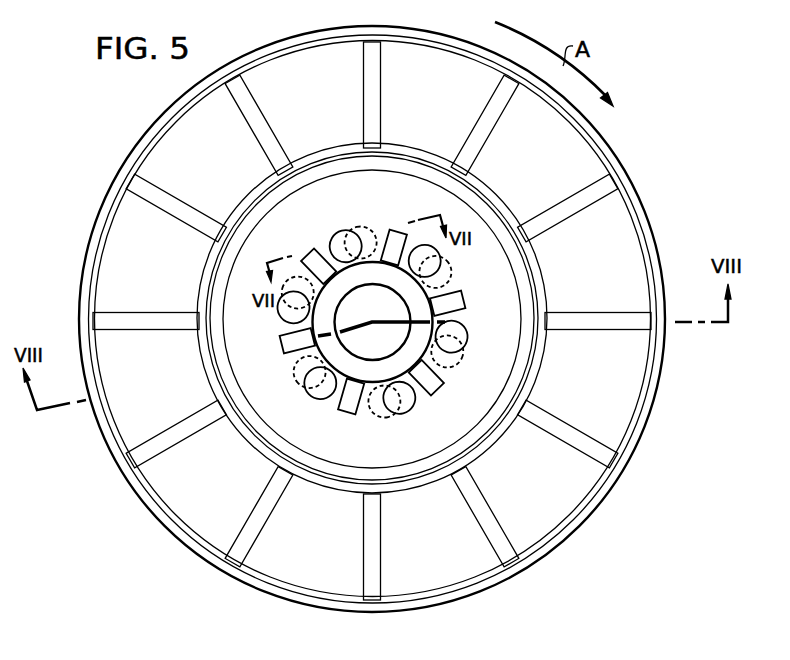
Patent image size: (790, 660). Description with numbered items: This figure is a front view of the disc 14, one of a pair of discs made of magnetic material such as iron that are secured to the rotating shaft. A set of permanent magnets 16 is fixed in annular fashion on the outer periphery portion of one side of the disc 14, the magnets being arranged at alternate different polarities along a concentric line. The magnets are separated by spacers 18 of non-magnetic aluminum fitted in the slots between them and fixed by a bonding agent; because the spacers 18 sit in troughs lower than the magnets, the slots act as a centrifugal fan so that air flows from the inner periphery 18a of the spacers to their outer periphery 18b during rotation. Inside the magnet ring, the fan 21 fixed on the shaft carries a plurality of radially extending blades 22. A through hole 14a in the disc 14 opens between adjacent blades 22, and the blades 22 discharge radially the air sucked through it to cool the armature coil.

The disc 14 is at (449, 602).
The through hole 14a is at (292, 316).
The permanent magnets 16 is at (177, 509).
The spacers 18 is at (488, 514).
The inner periphery 18a is at (465, 483).
The outer periphery 18b is at (512, 553).
The fan 21 is at (338, 392).
The blades 22 is at (360, 413).